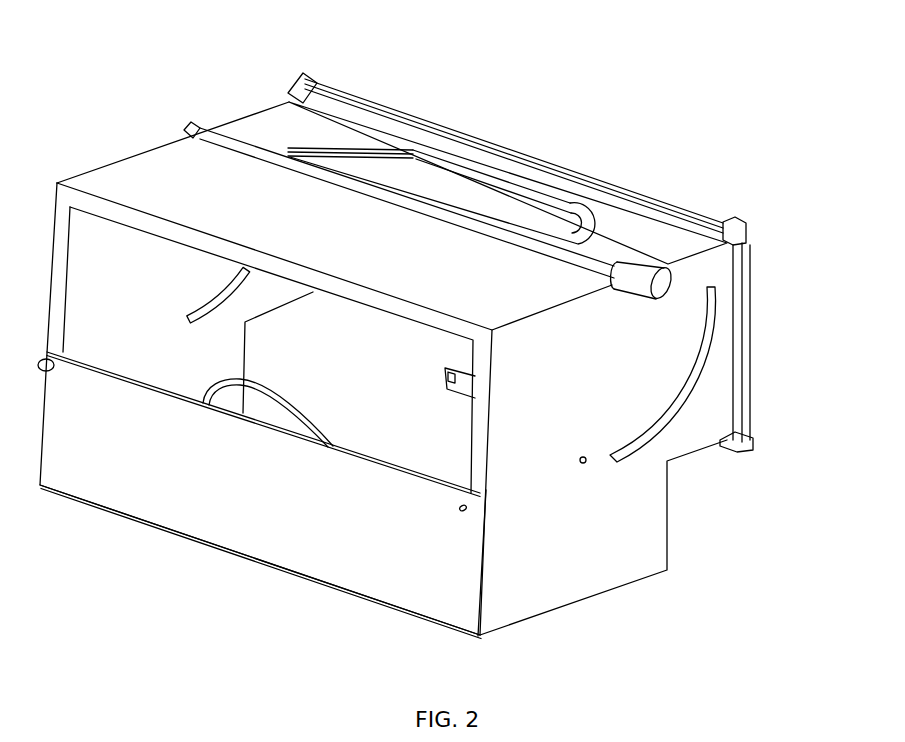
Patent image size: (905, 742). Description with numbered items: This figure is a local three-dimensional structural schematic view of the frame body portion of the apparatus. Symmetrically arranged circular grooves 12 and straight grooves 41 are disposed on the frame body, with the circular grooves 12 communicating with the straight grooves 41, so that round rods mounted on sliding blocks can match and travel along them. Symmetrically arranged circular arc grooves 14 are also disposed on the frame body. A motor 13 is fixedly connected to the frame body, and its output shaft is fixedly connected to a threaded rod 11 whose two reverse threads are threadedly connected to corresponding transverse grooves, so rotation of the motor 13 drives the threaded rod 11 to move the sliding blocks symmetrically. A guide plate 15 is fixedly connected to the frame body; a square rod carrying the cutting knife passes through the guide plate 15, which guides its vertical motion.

The threaded rod 11 is at (273, 150).
The circular grooves 12 is at (413, 153).
The motor 13 is at (647, 280).
The circular arc grooves 14 is at (677, 393).
The guide plate 15 is at (462, 387).
The straight grooves 41 is at (505, 179).